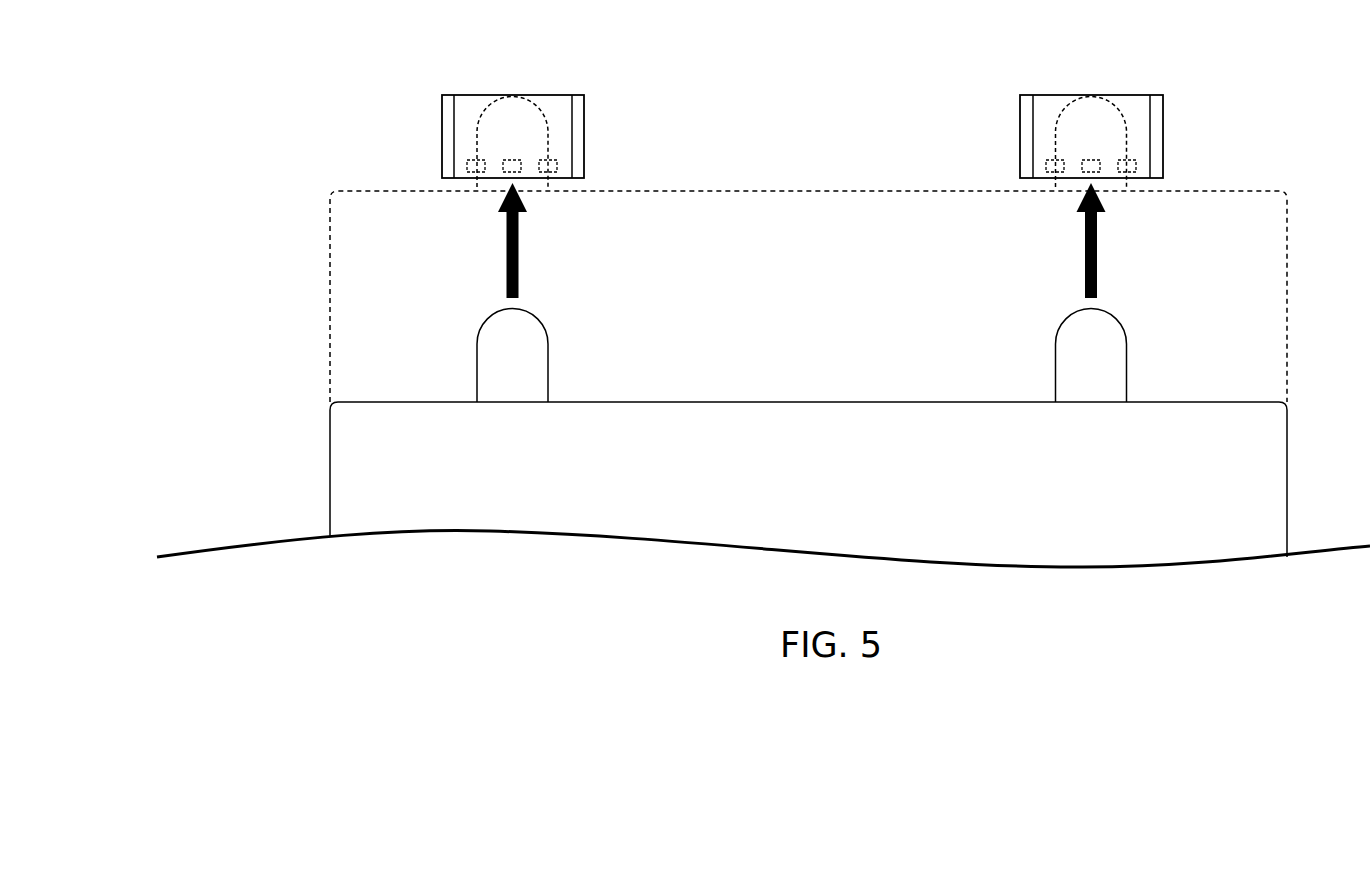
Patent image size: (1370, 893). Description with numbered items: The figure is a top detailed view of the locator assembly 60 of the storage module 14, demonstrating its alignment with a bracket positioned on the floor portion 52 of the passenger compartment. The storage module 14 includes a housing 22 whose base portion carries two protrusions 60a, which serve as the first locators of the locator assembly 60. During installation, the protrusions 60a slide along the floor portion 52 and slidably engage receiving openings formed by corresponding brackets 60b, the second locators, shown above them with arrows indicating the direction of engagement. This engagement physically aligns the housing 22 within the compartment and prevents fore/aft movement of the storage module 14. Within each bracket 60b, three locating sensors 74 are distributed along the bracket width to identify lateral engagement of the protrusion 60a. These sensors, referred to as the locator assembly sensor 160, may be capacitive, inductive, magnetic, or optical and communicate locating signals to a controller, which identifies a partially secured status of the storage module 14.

The storage module 14 is at (356, 435).
The housing 22 is at (838, 470).
The floor portion 52 is at (823, 154).
The locator assembly 60 is at (874, 238).
The protrusions 60a is at (549, 357).
The bracket 60b is at (573, 118).
The locating sensors 74 is at (732, 103).
The locator assembly sensor 160 is at (548, 160).